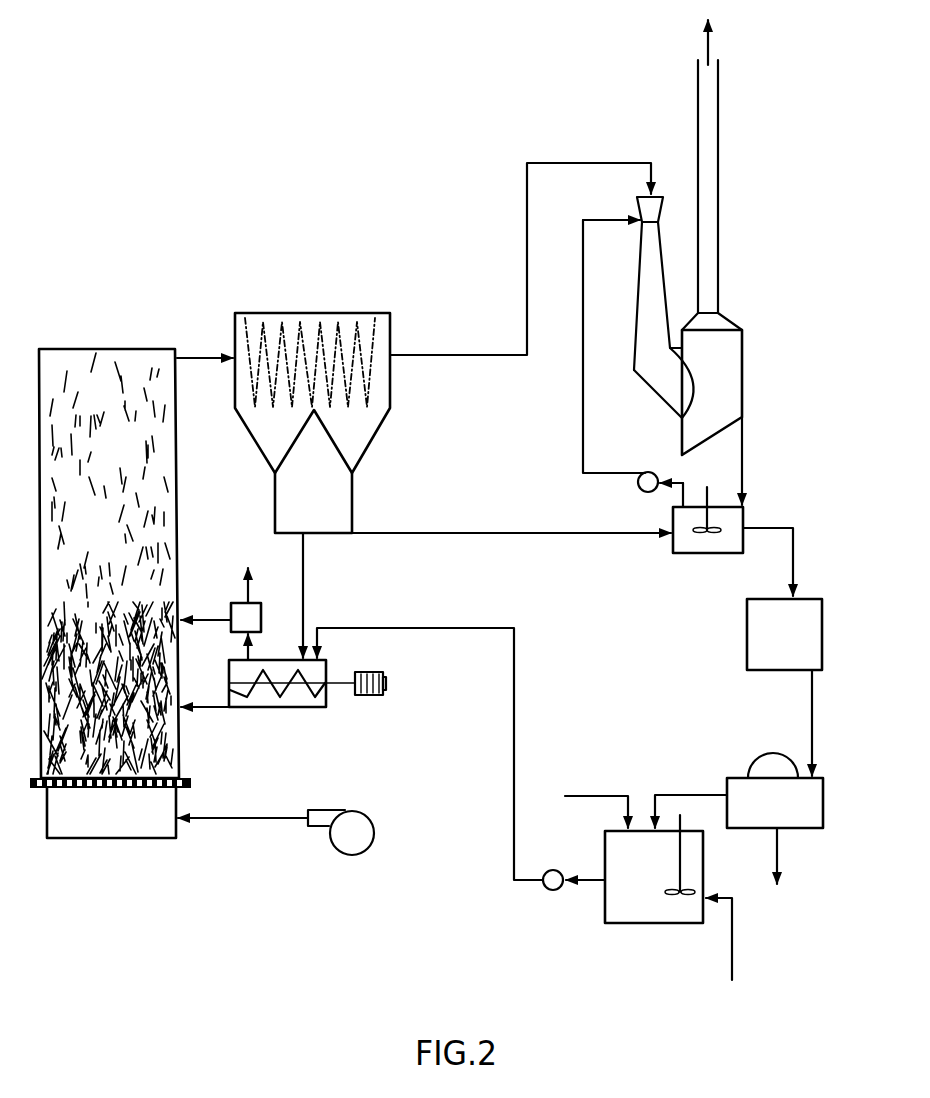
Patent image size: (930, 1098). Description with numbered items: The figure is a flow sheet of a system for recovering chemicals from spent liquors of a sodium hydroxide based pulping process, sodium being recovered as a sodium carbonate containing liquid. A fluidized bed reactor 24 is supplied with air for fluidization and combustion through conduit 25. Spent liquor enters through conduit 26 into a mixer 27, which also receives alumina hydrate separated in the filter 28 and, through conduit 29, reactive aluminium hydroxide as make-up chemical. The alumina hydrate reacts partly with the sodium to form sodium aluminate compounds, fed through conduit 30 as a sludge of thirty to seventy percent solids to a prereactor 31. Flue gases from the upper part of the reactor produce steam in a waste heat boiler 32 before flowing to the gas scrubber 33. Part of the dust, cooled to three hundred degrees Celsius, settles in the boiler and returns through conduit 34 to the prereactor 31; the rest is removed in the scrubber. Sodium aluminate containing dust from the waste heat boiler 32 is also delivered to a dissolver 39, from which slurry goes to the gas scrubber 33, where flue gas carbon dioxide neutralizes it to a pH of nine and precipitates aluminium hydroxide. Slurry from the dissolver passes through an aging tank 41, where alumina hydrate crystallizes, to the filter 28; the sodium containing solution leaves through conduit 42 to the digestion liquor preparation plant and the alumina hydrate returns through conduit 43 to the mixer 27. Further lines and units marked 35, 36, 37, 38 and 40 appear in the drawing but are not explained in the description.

The fluidized bed reactor 24 is at (89, 353).
The conduit 25 is at (241, 819).
The conduit 26 is at (585, 796).
The mixer 27 is at (638, 925).
The filter 28 is at (815, 820).
The conduit 29 is at (732, 965).
The conduit 30 is at (514, 857).
The prereactor 31 is at (271, 701).
The waste heat boiler 32 is at (319, 320).
The gas scrubber 33 is at (733, 370).
The conduit 34 is at (305, 587).
The vapor line 35 is at (247, 652).
The condenser unit 36 is at (250, 592).
The vent line 37 is at (204, 619).
The return line to tower 38 is at (217, 708).
The dissolver 39 is at (697, 548).
The scrubber liquid recirculation line 40 is at (583, 418).
The aging tank 41 is at (760, 657).
The conduit 42 is at (776, 860).
The conduit 43 is at (671, 793).